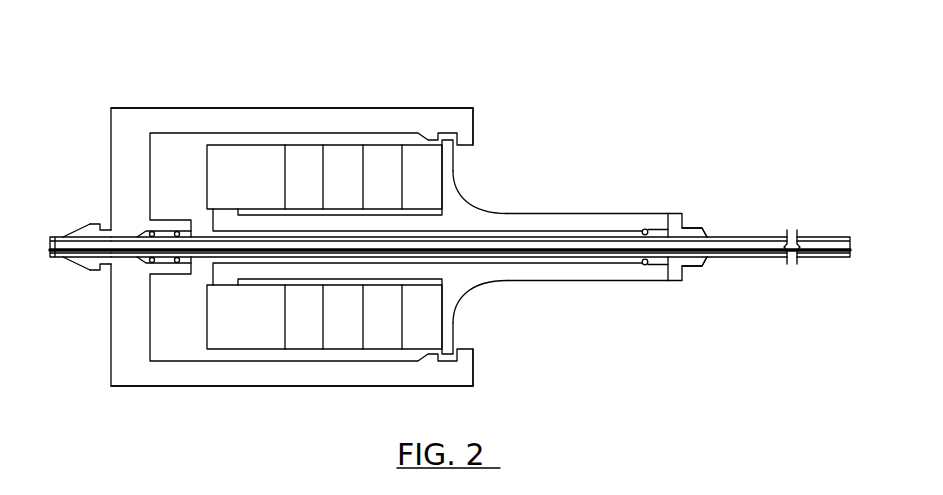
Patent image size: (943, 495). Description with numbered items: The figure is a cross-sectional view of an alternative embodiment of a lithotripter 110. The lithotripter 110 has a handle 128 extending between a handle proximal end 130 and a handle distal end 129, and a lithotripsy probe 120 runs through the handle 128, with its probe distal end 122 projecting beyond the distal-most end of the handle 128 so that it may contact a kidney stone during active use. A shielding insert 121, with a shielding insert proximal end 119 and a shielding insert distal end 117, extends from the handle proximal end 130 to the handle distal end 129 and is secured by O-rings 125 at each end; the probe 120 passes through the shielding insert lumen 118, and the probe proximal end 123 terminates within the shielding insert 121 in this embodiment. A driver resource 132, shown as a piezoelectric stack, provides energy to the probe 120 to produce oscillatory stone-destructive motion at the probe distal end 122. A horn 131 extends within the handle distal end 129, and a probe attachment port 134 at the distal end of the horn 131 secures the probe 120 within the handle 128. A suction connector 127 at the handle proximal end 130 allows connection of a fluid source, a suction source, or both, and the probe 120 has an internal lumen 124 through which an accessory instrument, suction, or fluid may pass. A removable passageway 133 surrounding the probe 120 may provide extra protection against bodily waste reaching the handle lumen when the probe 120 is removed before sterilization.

The lithotripter 110 is at (552, 82).
The shielding insert distal end 117 is at (672, 245).
The shielding insert lumen 118 is at (553, 250).
The shielding insert proximal end 119 is at (60, 237).
The lithotripsy probe 120 is at (775, 258).
The shielding insert 121 is at (612, 262).
The probe distal end 122 is at (852, 257).
The probe proximal end 123 is at (67, 259).
The internal lumen 124 is at (745, 257).
The O-rings 125 is at (177, 266).
The suction connector 127 is at (92, 268).
The handle 128 is at (327, 112).
The handle distal end 129 is at (711, 235).
The handle proximal end 130 is at (118, 108).
The horn 131 is at (580, 227).
The driver resource 132 is at (383, 167).
The removable passageway 133 is at (508, 232).
The probe attachment port 134 is at (687, 228).